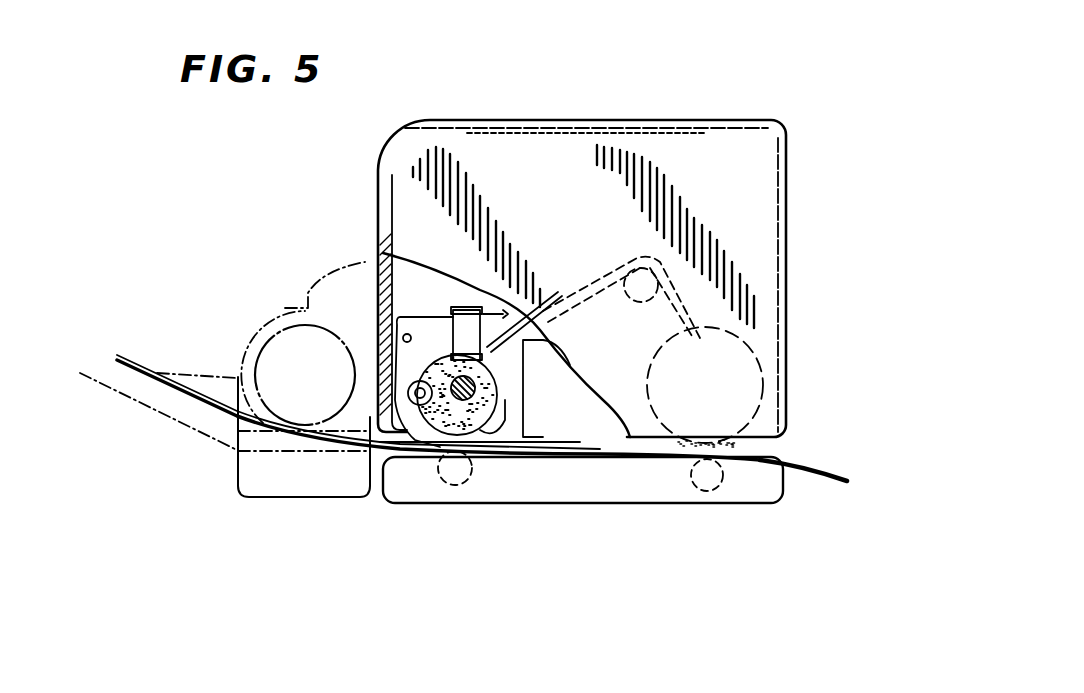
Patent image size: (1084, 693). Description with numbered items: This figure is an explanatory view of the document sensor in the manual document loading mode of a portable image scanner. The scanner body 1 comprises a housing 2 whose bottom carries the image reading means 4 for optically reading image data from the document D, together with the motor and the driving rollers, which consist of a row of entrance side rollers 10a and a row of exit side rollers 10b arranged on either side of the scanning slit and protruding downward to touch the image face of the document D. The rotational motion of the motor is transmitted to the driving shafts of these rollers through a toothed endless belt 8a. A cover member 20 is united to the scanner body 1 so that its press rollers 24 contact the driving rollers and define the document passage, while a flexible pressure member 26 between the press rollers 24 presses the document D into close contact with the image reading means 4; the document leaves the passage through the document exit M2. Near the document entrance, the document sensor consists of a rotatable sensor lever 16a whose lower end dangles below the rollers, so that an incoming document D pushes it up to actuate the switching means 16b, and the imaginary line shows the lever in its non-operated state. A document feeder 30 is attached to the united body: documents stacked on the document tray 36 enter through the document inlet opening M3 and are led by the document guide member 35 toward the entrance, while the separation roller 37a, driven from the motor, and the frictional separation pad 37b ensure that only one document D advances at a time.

The scanner body 1 is at (661, 112).
The housing 2 is at (757, 168).
The image reading means 4 is at (603, 413).
The toothed endless belt 8a is at (680, 302).
The exit side rollers 10b is at (750, 357).
The entrance side rollers 10a is at (514, 444).
The sensor lever 16a is at (425, 447).
The switching means 16b is at (440, 327).
The cover member 20 is at (778, 505).
The press rollers 24 is at (716, 488).
The pressure member 26 is at (572, 460).
The document feeder 30 is at (238, 490).
The document guide member 35 is at (333, 452).
The document tray 36 is at (138, 398).
The separation roller 37a is at (285, 330).
The separation pad 37b is at (273, 452).
The document D is at (820, 477).
The document exit M2 is at (780, 447).
The document inlet opening M3 is at (237, 397).